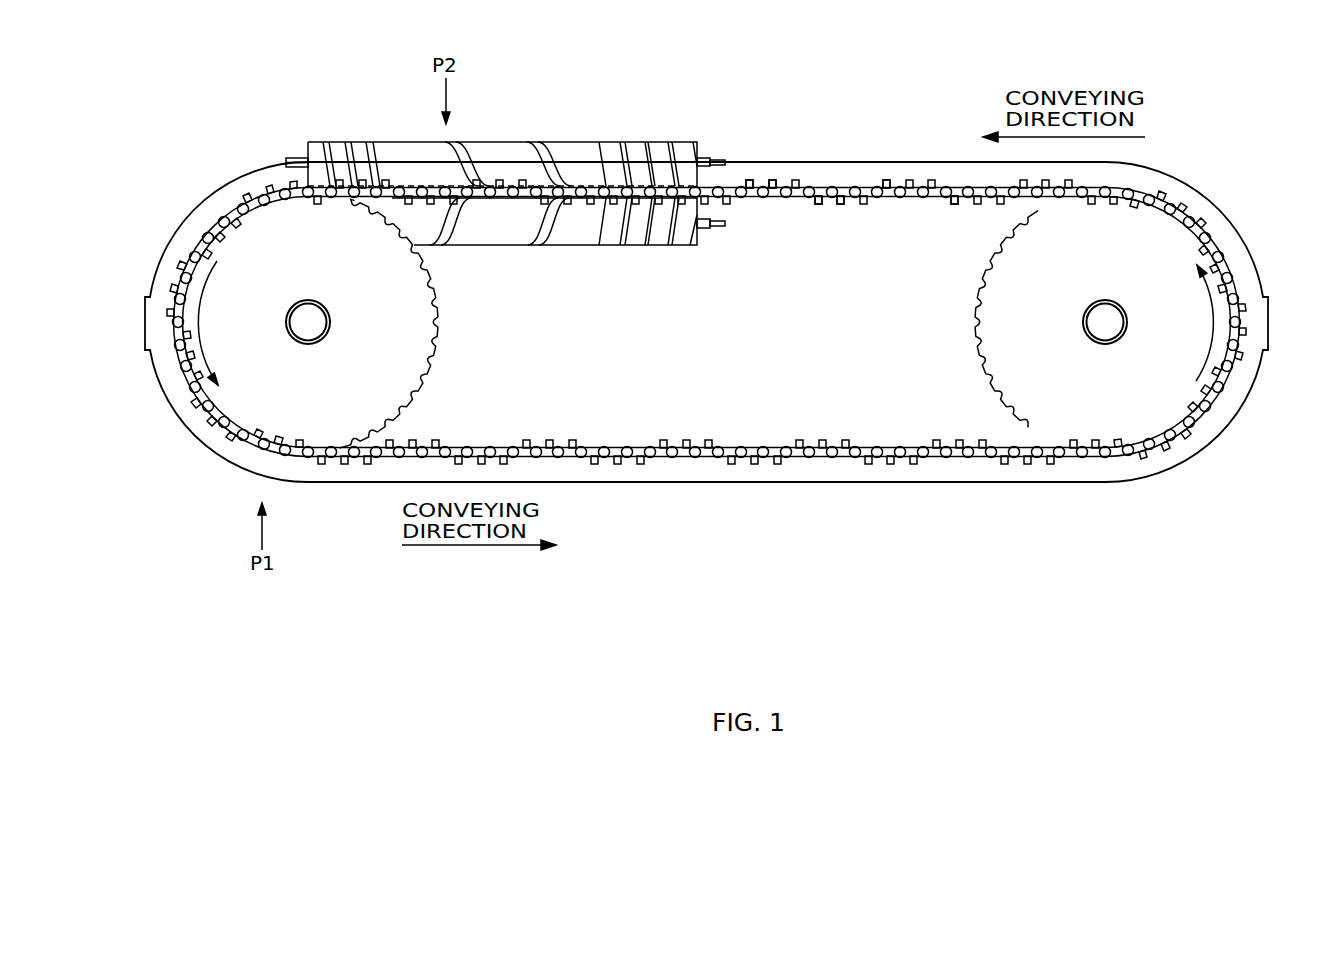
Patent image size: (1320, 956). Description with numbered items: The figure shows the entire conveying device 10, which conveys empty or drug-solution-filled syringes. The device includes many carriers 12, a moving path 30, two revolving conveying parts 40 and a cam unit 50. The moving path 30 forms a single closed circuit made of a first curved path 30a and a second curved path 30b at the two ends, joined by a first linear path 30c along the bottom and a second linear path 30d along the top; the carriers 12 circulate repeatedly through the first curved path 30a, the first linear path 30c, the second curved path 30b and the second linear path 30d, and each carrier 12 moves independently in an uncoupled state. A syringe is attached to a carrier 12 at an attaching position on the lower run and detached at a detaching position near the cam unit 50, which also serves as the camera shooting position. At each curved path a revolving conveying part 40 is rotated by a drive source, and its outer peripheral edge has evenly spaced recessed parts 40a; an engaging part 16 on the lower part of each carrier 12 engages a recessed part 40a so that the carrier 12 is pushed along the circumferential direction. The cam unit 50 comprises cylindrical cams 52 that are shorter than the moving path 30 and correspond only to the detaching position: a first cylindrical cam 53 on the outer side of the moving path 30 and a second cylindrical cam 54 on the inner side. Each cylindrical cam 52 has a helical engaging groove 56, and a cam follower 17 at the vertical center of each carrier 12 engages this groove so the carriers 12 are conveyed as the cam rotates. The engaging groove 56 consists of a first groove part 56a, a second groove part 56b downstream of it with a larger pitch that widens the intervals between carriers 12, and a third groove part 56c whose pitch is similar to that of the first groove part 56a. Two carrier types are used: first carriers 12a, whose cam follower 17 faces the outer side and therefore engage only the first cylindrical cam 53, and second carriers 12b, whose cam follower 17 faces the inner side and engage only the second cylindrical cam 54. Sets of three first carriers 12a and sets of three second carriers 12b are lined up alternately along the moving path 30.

The conveying device 10 is at (884, 510).
The carrier 12 is at (706, 266).
The first carrier 12a is at (770, 200).
The second carrier 12b is at (836, 204).
The engaging part 16 is at (876, 186).
The cam follower 17 is at (886, 182).
The moving path 30 is at (708, 324).
The first curved path 30a is at (190, 424).
The second curved path 30b is at (1226, 237).
The first linear path 30c is at (757, 480).
The second linear path 30d is at (806, 178).
The revolving conveying part 40 is at (706, 323).
The recessed part 40a is at (427, 370).
The cam unit 50 is at (508, 175).
The cylindrical cam 52 is at (502, 195).
The first cylindrical cam 53 is at (513, 142).
The second cylindrical cam 54 is at (578, 246).
The engaging groove 56 is at (526, 170).
The first groove part 56a is at (653, 142).
The second groove part 56b is at (460, 142).
The third groove part 56c is at (335, 142).